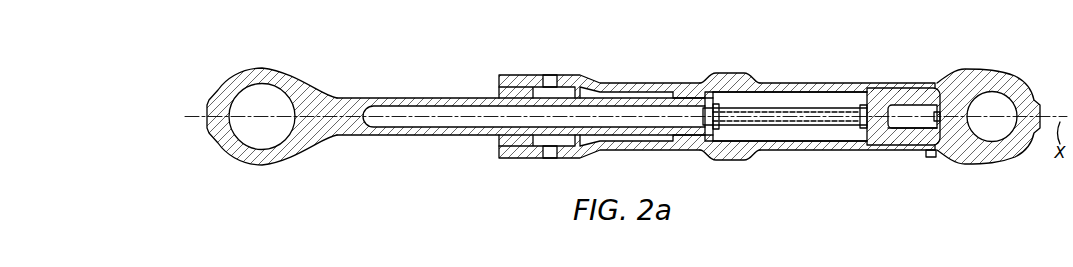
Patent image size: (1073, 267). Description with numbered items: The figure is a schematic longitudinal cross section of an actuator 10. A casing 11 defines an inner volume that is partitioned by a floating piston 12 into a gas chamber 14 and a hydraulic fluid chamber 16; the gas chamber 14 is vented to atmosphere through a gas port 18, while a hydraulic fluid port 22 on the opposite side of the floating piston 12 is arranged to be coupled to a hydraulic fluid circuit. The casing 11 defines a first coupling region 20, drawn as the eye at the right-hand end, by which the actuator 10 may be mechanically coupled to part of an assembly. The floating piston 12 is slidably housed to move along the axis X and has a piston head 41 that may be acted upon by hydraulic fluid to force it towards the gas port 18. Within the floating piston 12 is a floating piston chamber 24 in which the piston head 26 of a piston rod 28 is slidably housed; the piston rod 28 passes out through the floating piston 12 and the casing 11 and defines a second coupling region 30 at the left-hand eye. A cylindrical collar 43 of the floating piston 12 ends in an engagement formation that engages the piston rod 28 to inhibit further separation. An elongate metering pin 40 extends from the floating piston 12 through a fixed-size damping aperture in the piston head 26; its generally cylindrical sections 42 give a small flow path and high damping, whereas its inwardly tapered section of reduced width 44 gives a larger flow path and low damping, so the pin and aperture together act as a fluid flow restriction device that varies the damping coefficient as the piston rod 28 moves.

The actuator 10 is at (849, 46).
The casing 11 is at (732, 82).
The floating piston 12 is at (878, 104).
The gas chamber 14 is at (913, 112).
The hydraulic fluid chamber 16 is at (636, 92).
The gas port 18 is at (931, 158).
The first coupling region 20 is at (990, 94).
The hydraulic fluid port 22 is at (550, 80).
The floating piston chamber 24 is at (765, 103).
The piston head 26 is at (708, 143).
The piston rod 28 is at (630, 137).
The second coupling region 30 is at (261, 95).
The metering pin 40 is at (787, 128).
The piston head 41 is at (906, 140).
The cylindrical sections 42 is at (736, 141).
The cylindrical collar 43 is at (817, 141).
The section of reduced width 44 is at (792, 109).